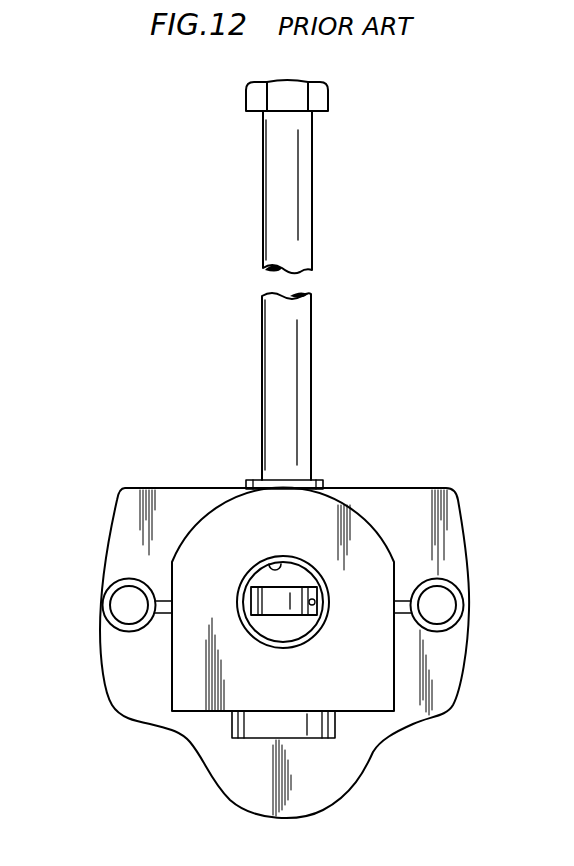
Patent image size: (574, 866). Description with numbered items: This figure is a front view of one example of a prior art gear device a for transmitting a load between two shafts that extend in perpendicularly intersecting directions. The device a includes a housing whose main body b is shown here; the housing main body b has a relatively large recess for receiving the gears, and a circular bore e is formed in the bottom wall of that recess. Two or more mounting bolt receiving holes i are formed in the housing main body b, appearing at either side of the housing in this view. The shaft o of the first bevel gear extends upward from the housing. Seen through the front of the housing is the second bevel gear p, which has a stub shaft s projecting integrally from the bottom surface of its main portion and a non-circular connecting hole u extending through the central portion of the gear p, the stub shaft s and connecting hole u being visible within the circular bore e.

The gear device a is at (474, 249).
The housing main body b is at (462, 523).
The shaft o is at (311, 327).
The mounting bolt receiving holes i is at (118, 604).
The stub shaft s is at (258, 580).
The circular bore e is at (278, 563).
The non-circular connecting hole u is at (316, 603).
The second bevel gear p is at (292, 628).